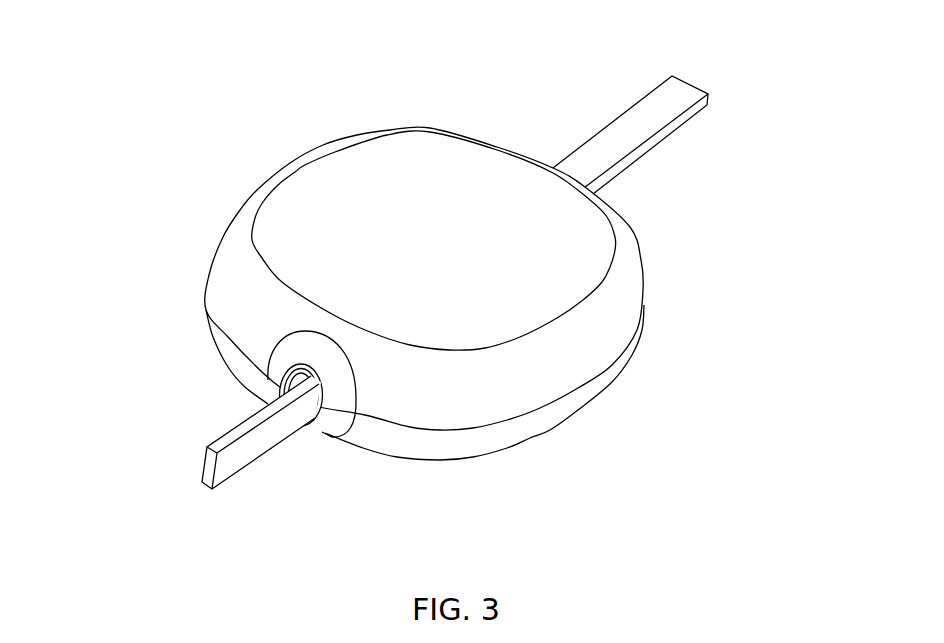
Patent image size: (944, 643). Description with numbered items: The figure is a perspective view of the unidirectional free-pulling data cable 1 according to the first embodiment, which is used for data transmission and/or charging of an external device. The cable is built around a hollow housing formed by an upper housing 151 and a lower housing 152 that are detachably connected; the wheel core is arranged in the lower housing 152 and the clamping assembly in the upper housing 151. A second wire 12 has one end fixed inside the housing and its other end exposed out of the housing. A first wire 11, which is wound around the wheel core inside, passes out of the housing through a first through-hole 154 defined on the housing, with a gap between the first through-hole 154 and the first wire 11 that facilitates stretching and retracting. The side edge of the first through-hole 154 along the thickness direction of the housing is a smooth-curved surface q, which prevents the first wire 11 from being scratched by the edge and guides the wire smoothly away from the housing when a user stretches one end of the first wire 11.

The unidirectional free-pulling data cable 1 is at (476, 47).
The first wire 11 is at (203, 461).
The second wire 12 is at (638, 127).
The upper housing 151 is at (587, 252).
The lower housing 152 is at (530, 442).
The first through-hole 154 is at (307, 427).
The smooth-curved surface q is at (278, 386).